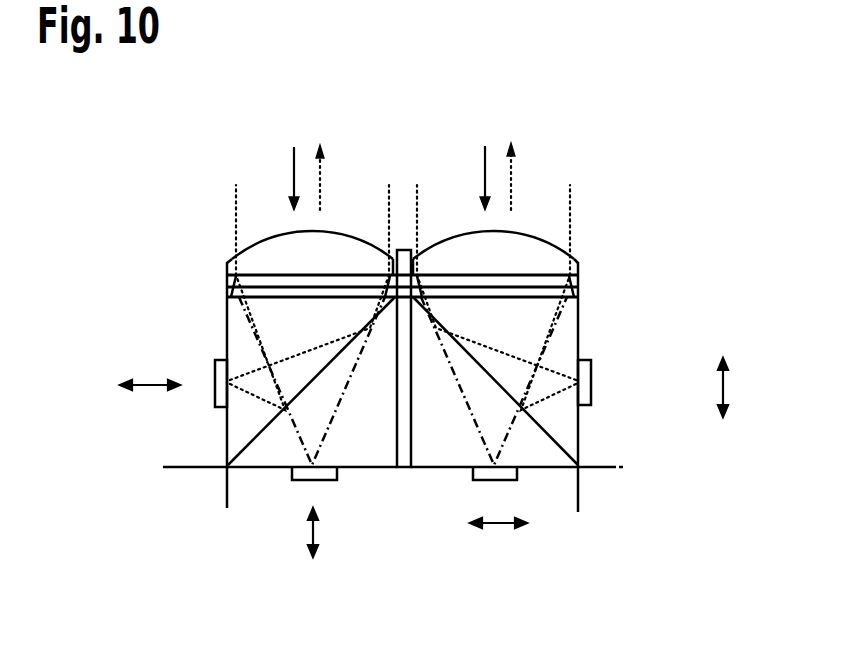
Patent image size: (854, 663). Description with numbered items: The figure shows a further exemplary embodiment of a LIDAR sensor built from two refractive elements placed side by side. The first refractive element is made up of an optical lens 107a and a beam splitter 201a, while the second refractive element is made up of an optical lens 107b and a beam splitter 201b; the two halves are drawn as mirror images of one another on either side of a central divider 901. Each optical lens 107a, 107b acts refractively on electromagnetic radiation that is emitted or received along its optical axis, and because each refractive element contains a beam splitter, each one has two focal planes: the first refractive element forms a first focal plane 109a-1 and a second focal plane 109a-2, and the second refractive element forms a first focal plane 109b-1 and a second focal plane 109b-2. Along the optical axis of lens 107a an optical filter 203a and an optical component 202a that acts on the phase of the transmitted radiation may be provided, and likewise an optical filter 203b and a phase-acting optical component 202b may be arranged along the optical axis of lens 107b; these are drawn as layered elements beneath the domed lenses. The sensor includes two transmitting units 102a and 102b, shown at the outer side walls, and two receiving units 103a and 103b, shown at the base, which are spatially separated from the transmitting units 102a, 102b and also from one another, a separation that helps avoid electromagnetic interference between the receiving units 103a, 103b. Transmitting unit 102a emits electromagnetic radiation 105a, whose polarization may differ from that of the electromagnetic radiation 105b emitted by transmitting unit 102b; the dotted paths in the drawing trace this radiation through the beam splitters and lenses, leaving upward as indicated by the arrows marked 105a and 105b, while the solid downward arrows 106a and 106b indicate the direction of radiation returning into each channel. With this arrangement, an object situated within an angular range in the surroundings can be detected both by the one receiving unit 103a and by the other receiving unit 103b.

The emitted light direction (second channel) 106b is at (293, 147).
The emitted light direction (first channel) 106a is at (485, 146).
The electromagnetic radiation 105b is at (322, 196).
The electromagnetic radiation 105a is at (520, 197).
The second optical lens 107b is at (270, 237).
The first optical lens 107a is at (472, 233).
The optical filter 203b is at (227, 281).
The optical filter 203a is at (579, 281).
The optical component 202b is at (227, 290).
The optical component 202a is at (579, 290).
The transmitting unit 102b is at (215, 377).
The transmitting unit 102a is at (592, 378).
The first focal plane 109b-1 is at (200, 466).
The second focal plane 109b-2 is at (227, 497).
The first focal plane 109a-1 is at (605, 465).
The second focal plane 109a-2 is at (579, 496).
The receiving unit 103b is at (292, 478).
The receiving unit 103a is at (473, 478).
The separating wall 901 is at (404, 470).
The beam splitter 201b is at (355, 470).
The beam splitter 201a is at (543, 470).